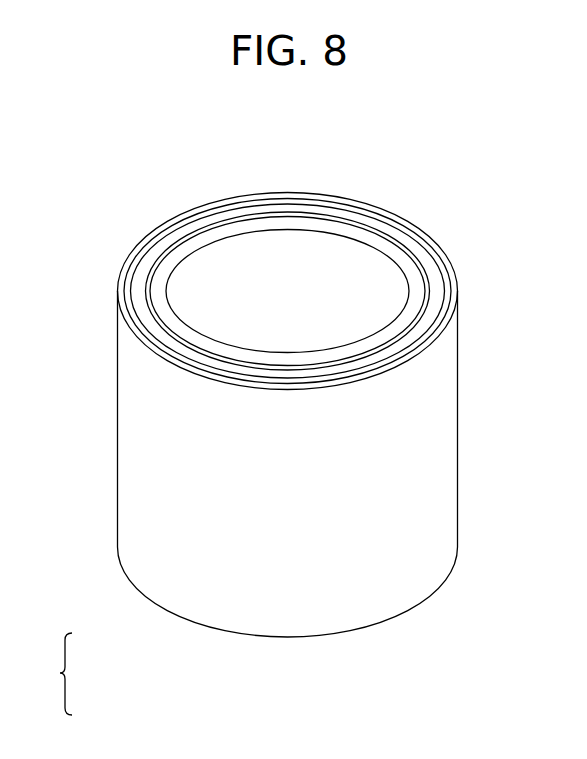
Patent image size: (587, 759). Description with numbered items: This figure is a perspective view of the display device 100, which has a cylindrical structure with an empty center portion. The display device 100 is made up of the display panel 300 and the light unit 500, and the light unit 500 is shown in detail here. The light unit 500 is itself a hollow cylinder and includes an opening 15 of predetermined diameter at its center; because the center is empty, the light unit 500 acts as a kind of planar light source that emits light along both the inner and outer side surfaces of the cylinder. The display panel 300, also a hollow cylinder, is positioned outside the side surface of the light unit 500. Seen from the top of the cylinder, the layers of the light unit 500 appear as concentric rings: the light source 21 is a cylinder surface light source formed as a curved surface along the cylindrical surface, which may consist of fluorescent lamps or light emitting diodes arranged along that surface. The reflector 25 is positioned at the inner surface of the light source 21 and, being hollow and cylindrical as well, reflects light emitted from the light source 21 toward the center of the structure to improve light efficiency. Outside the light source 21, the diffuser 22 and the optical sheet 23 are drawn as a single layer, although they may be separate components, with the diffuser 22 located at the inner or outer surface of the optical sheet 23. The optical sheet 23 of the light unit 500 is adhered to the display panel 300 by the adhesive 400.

The opening 15 is at (288, 290).
The light source 21 is at (412, 252).
The diffuser 22 is at (332, 291).
The optical sheet 23 is at (427, 267).
The reflector 25 is at (417, 328).
The display device 100 is at (433, 214).
The display panel 300 is at (450, 302).
The adhesive 400 is at (395, 220).
The light unit 500 is at (60, 673).